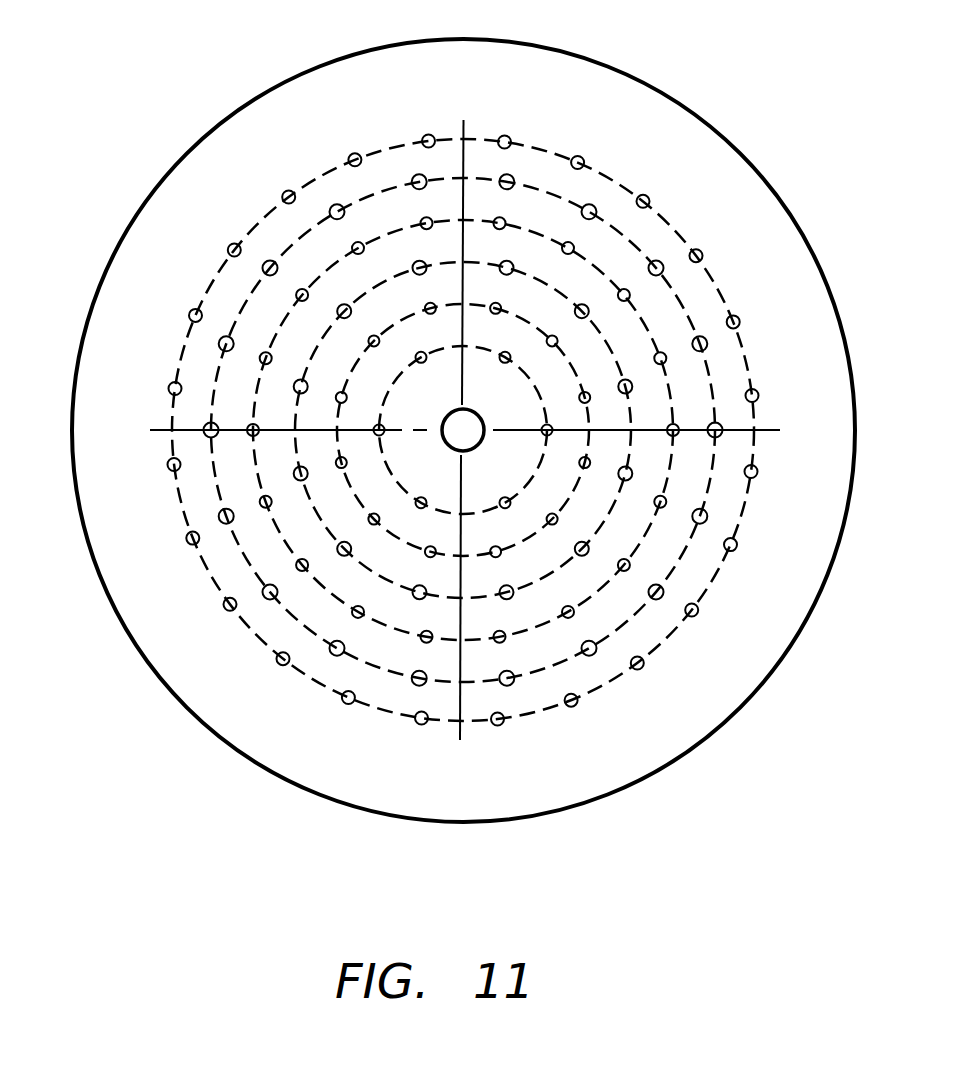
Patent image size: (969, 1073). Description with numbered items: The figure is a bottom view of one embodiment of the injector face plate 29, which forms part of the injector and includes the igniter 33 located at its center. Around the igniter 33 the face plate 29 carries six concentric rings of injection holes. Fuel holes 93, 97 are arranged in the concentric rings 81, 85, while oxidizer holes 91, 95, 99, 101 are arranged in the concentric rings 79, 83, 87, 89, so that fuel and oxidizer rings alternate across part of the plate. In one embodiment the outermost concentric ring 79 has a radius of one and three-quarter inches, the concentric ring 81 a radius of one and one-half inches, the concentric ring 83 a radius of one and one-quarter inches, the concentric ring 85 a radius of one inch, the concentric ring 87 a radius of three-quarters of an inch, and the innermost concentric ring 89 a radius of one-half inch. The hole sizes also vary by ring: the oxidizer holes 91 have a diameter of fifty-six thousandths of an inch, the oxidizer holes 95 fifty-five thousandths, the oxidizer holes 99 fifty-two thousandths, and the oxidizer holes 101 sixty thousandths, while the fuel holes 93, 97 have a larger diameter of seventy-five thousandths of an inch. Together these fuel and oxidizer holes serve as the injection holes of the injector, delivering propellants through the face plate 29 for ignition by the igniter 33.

The injector face plate 29 is at (107, 532).
The igniter 33 is at (635, 580).
The concentric ring 79 is at (262, 218).
The concentric ring 81 is at (277, 255).
The concentric ring 83 is at (291, 310).
The concentric ring 85 is at (308, 356).
The concentric ring 87 is at (345, 388).
The concentric ring 89 is at (380, 413).
The oxidizer holes 91 is at (510, 139).
The fuel holes 93 is at (514, 180).
The oxidizer holes 95 is at (508, 221).
The fuel holes 97 is at (514, 270).
The oxidizer holes 99 is at (502, 306).
The oxidizer holes 101 is at (511, 355).